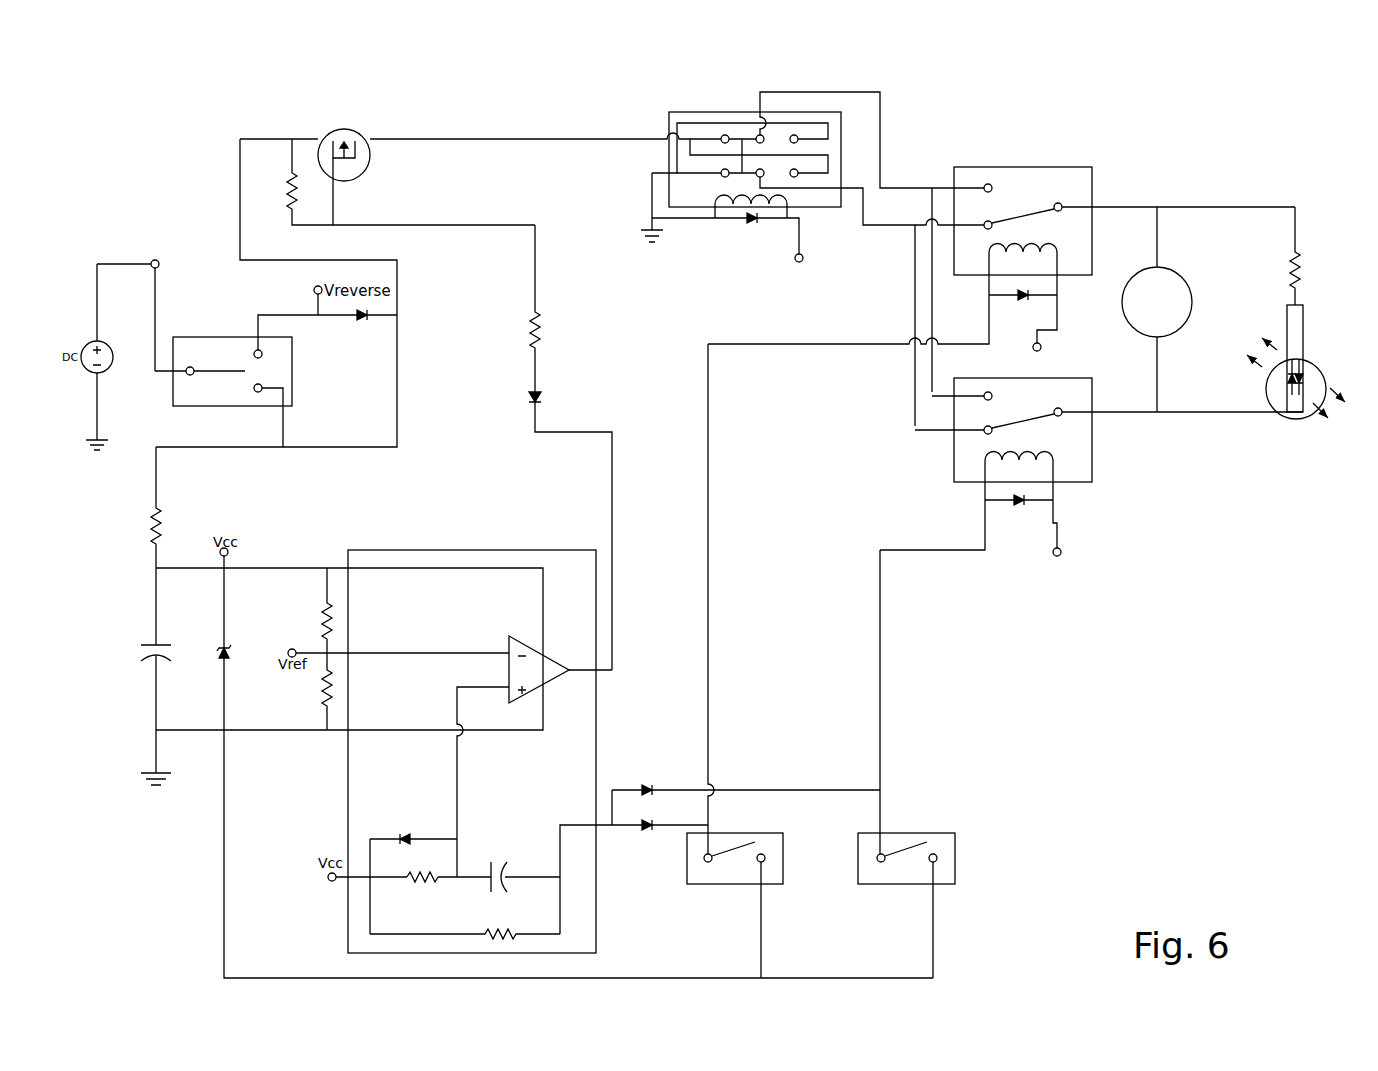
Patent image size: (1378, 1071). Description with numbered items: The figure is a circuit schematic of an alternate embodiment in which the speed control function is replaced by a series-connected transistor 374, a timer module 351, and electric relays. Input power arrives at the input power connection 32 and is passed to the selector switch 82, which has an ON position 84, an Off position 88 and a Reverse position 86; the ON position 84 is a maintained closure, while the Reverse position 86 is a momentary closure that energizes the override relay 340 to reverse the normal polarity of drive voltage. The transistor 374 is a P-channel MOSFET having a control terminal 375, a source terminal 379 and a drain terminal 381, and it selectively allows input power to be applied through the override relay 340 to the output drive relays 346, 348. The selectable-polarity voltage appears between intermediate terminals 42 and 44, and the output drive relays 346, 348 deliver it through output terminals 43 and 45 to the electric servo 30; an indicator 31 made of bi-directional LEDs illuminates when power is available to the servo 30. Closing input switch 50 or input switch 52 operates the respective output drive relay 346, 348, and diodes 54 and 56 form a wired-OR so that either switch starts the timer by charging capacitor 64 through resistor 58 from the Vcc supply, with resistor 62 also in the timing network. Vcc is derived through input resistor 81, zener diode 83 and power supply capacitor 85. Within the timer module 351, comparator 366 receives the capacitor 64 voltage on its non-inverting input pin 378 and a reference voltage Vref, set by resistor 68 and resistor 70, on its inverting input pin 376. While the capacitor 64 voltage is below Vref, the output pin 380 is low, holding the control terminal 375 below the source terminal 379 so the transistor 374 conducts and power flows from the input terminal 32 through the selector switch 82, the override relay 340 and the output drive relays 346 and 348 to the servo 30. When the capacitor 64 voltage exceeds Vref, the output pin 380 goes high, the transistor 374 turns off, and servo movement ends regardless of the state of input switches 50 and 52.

The electric servo 30 is at (1196, 279).
The indicator 31 is at (1318, 356).
The input power connection 32 is at (155, 258).
The intermediate terminal 42 is at (904, 184).
The output terminal 43 is at (1105, 201).
The intermediate terminal 44 is at (877, 230).
The output terminal 45 is at (1114, 406).
The input switch 50 is at (778, 893).
The input switch 52 is at (960, 868).
The diode 54 is at (650, 778).
The diode 56 is at (638, 838).
The resistor 58 is at (415, 889).
The resistor 62 is at (492, 927).
The capacitor 64 is at (512, 884).
The resistor 68 is at (318, 613).
The resistor 70 is at (318, 698).
The input resistor 81 is at (148, 525).
The selector switch 82 is at (197, 334).
The zener diode 83 is at (233, 650).
The ON position 84 is at (252, 393).
The power supply capacitor 85 is at (144, 652).
The Reverse position 86 is at (252, 346).
The Off position 88 is at (273, 371).
The override relay 340 is at (722, 109).
The output drive relay 346 is at (1028, 165).
The output drive relay 348 is at (1079, 486).
The timer module 351 is at (446, 547).
The comparator 366 is at (550, 686).
The transistor 374 is at (360, 124).
The control terminal 375 is at (337, 192).
The inverting input pin 376 is at (500, 648).
The non-inverting input pin 378 is at (502, 686).
The source terminal 379 is at (315, 136).
The output pin 380 is at (616, 669).
The drain terminal 381 is at (383, 137).